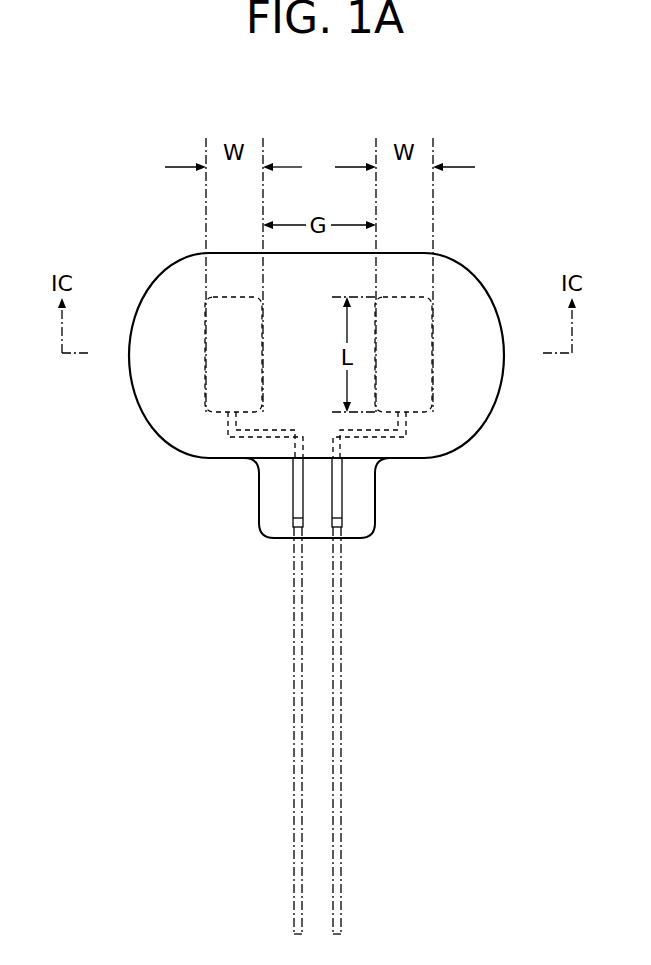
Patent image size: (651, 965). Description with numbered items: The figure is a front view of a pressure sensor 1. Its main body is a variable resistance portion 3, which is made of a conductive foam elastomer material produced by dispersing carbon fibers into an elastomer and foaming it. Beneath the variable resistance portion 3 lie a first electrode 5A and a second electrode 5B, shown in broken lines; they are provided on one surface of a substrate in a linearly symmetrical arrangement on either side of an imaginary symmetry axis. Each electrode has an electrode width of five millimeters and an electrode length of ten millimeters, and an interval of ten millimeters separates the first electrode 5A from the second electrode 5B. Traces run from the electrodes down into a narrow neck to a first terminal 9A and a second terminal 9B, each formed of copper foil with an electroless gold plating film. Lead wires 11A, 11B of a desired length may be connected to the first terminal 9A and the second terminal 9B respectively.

The pressure sensor 1 is at (456, 240).
The variable resistance portion 3 is at (150, 303).
The first electrode 5A is at (217, 353).
The second electrode 5B is at (417, 353).
The first terminal 9A is at (296, 492).
The second terminal 9B is at (338, 492).
The lead wire 11A is at (294, 622).
The lead wire 11B is at (341, 622).